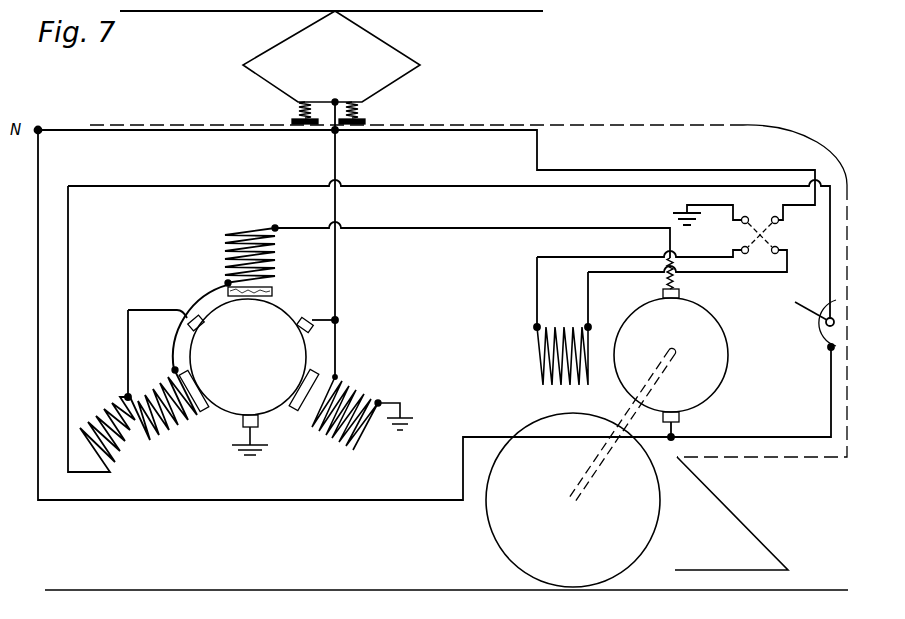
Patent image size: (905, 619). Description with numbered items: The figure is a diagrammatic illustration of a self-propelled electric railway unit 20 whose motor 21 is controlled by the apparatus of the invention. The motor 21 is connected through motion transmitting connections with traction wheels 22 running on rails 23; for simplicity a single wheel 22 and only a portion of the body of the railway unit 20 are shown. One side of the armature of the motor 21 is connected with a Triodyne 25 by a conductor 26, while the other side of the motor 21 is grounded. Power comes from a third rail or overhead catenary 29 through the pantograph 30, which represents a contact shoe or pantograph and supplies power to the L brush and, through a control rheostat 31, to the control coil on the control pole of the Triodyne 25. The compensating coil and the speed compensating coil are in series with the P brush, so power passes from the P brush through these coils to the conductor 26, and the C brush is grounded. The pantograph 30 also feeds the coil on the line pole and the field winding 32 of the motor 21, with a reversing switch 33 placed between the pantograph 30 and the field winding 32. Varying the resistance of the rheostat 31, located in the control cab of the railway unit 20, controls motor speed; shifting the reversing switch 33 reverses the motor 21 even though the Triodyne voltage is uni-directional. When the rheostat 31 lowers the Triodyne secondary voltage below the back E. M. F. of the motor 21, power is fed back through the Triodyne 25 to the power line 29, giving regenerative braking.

The railway unit 20 is at (668, 124).
The motor 21 is at (695, 313).
The traction wheels 22 is at (656, 536).
The rails 23 is at (808, 590).
The Triodyne 25 is at (307, 303).
The conductor 26 is at (425, 229).
The third rail or overhead catenary 29 is at (493, 12).
The pantograph 30 is at (412, 75).
The control rheostat 31 is at (810, 340).
The field winding 32 is at (537, 342).
The reversing switch 33 is at (772, 239).